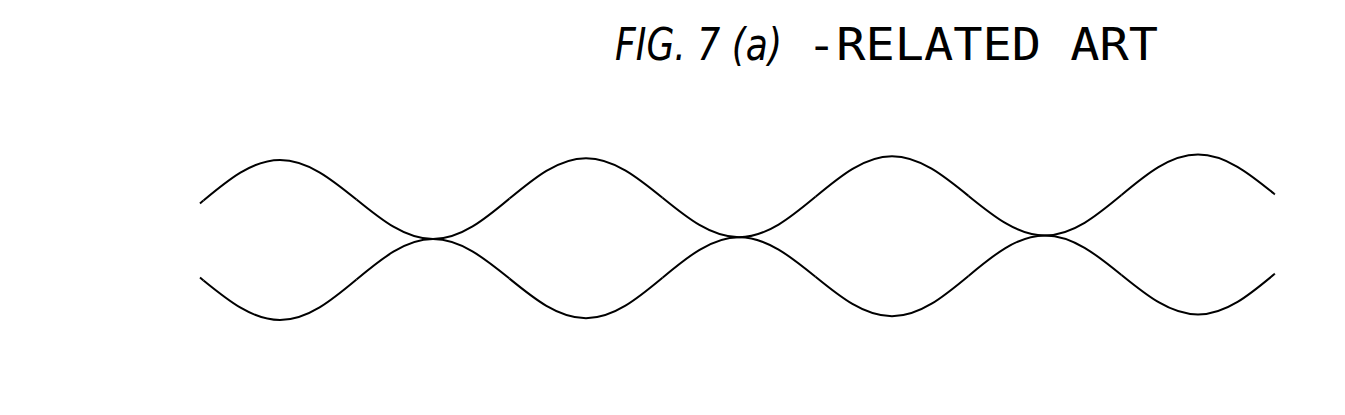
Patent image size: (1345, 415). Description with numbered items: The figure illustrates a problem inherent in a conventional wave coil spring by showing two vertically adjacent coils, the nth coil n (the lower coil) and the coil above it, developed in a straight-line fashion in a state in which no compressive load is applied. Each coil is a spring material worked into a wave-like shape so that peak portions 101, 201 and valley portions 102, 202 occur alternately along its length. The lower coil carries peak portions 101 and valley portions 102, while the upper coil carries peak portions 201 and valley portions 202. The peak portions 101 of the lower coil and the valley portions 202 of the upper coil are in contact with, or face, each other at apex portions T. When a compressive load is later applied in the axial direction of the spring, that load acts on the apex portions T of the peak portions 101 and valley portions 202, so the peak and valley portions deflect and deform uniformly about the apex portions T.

The peak portion 201 is at (262, 211).
The valley portion 202 is at (413, 212).
The peak portion 101 is at (413, 304).
The valley portion 102 is at (262, 304).
The apex portion T is at (700, 290).
The nth coil n is at (243, 311).